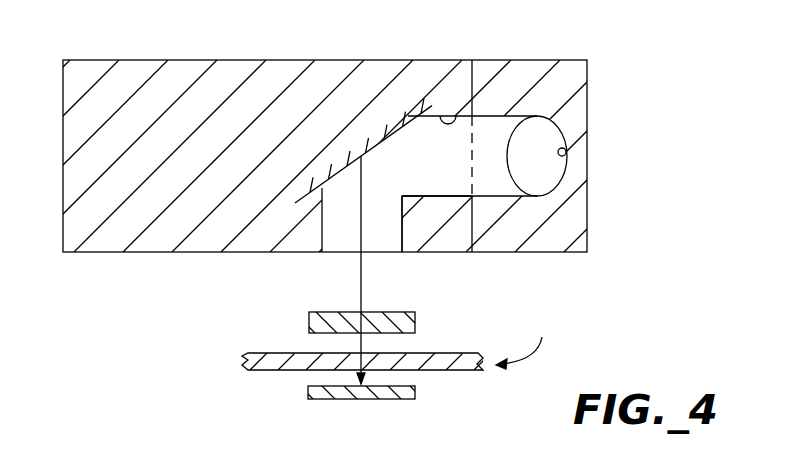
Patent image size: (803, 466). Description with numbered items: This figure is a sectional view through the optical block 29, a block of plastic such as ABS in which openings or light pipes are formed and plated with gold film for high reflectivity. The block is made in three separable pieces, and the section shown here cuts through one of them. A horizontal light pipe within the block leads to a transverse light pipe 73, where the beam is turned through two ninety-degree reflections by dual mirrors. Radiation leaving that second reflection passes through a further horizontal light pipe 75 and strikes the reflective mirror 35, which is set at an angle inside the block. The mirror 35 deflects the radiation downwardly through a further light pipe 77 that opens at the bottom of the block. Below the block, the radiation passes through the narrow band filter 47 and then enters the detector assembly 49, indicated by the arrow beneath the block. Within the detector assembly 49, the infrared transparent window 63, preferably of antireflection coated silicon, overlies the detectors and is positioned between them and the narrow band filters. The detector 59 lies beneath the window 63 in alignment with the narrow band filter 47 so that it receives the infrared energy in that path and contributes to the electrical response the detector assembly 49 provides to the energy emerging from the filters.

The optical block 29 is at (198, 60).
The reflective mirror 35 is at (385, 138).
The narrow band filter 47 is at (325, 311).
The detector assembly 49 is at (524, 338).
The detector 59 is at (400, 400).
The infrared transparent window 63 is at (438, 353).
The transverse light pipe 73 is at (567, 150).
The horizontal light pipe 75 is at (443, 113).
The light pipe 77 is at (402, 228).